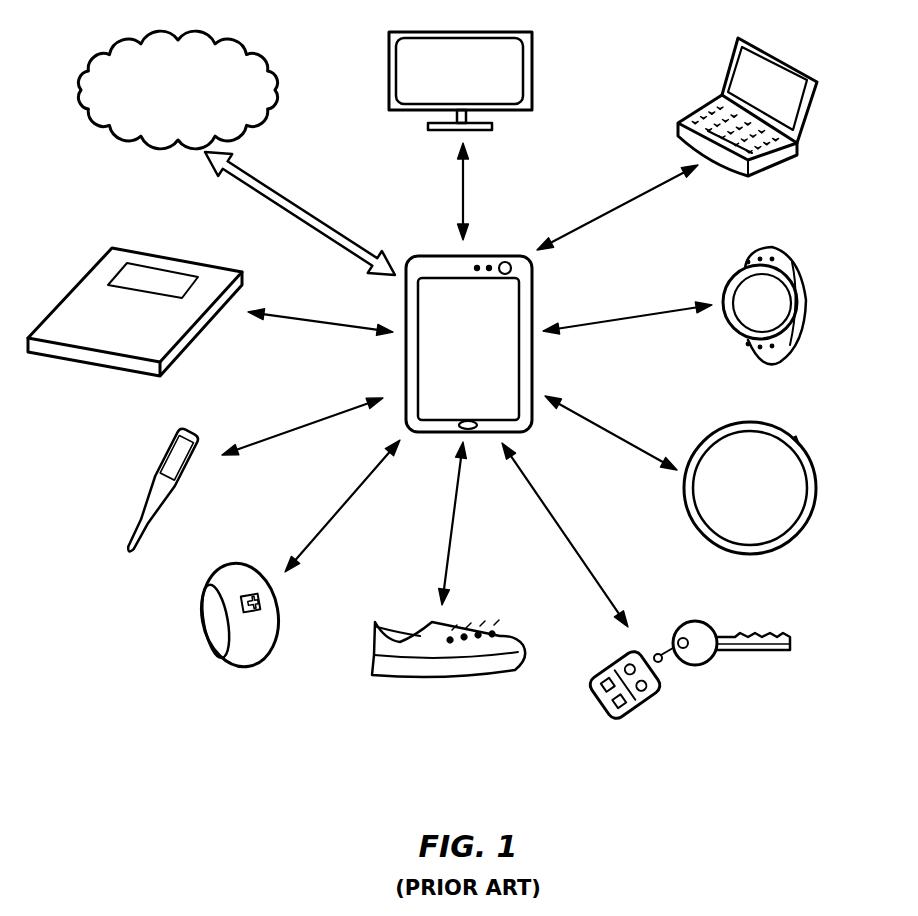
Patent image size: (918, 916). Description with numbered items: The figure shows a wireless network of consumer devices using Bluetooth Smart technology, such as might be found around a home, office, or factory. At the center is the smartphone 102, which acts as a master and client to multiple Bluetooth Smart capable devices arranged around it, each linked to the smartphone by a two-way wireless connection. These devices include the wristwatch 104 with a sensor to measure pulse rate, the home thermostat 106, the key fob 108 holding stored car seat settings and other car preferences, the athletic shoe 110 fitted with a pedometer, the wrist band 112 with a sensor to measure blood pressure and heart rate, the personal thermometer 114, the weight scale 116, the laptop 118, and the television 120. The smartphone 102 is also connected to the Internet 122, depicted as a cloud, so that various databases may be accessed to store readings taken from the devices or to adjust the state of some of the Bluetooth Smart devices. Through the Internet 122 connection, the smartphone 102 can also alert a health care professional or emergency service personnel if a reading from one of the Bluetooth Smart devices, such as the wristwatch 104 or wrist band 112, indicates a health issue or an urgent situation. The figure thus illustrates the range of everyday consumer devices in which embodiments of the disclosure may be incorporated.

The smartphone 102 is at (532, 299).
The wristwatch 104 is at (770, 251).
The home thermostat 106 is at (758, 424).
The key fob 108 is at (640, 708).
The athletic shoe 110 is at (432, 683).
The wrist band 112 is at (240, 668).
The personal thermometer 114 is at (168, 445).
The weight scale 116 is at (168, 254).
The laptop 118 is at (770, 49).
The television 120 is at (480, 32).
The Internet 122 is at (262, 48).